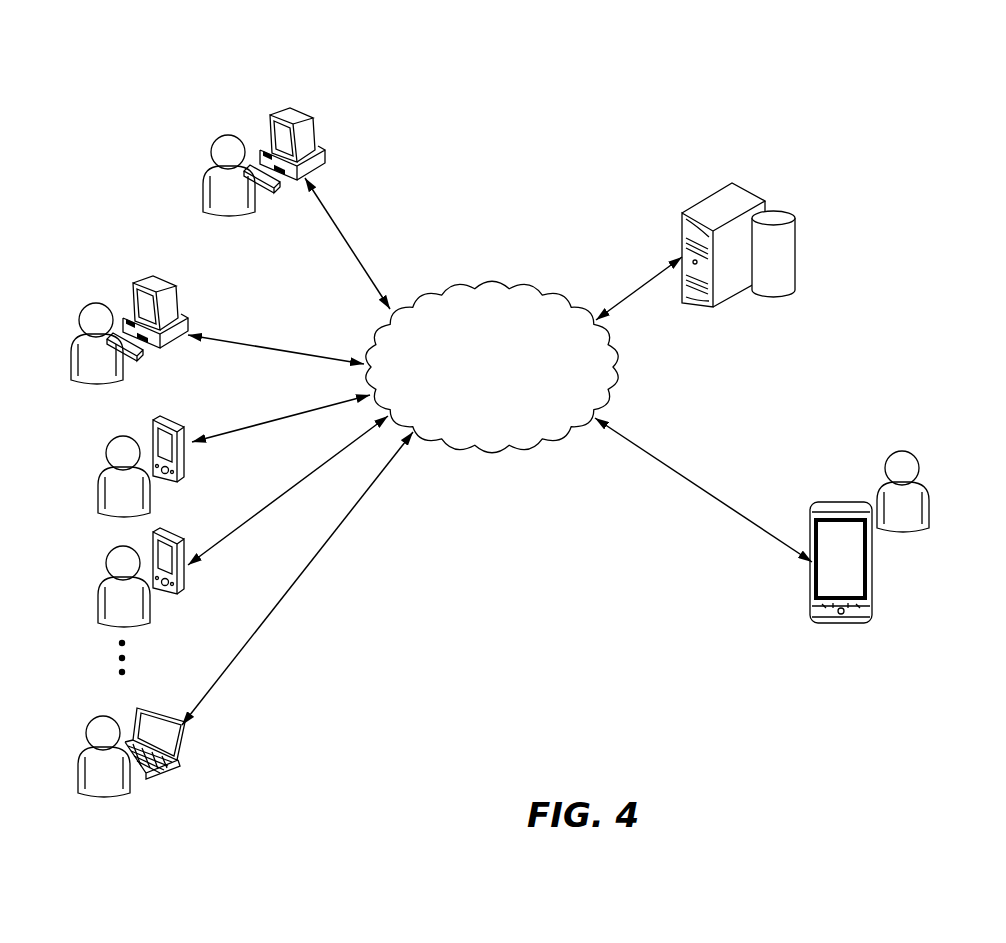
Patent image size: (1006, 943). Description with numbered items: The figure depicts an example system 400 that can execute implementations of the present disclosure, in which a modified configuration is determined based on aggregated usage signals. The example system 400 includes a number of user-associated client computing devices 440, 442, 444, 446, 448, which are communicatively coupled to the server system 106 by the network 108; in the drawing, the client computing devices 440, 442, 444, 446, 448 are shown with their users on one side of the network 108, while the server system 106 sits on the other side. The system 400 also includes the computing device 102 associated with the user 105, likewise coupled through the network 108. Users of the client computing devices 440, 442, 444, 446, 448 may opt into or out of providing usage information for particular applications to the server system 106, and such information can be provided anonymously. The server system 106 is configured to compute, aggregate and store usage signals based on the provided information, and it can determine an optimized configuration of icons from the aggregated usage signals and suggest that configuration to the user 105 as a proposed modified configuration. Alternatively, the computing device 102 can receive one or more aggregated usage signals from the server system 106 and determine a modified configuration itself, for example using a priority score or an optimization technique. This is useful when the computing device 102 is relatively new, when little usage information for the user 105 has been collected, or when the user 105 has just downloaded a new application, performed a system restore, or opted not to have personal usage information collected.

The example system 400 is at (648, 76).
The network 108 is at (474, 286).
The client computing device 440 is at (303, 115).
The client computing device 442 is at (168, 284).
The client computing device 444 is at (166, 419).
The client computing device 446 is at (166, 531).
The client computing device 448 is at (137, 708).
The server system 106 is at (745, 192).
The computing device 102 is at (842, 505).
The user 105 is at (929, 496).